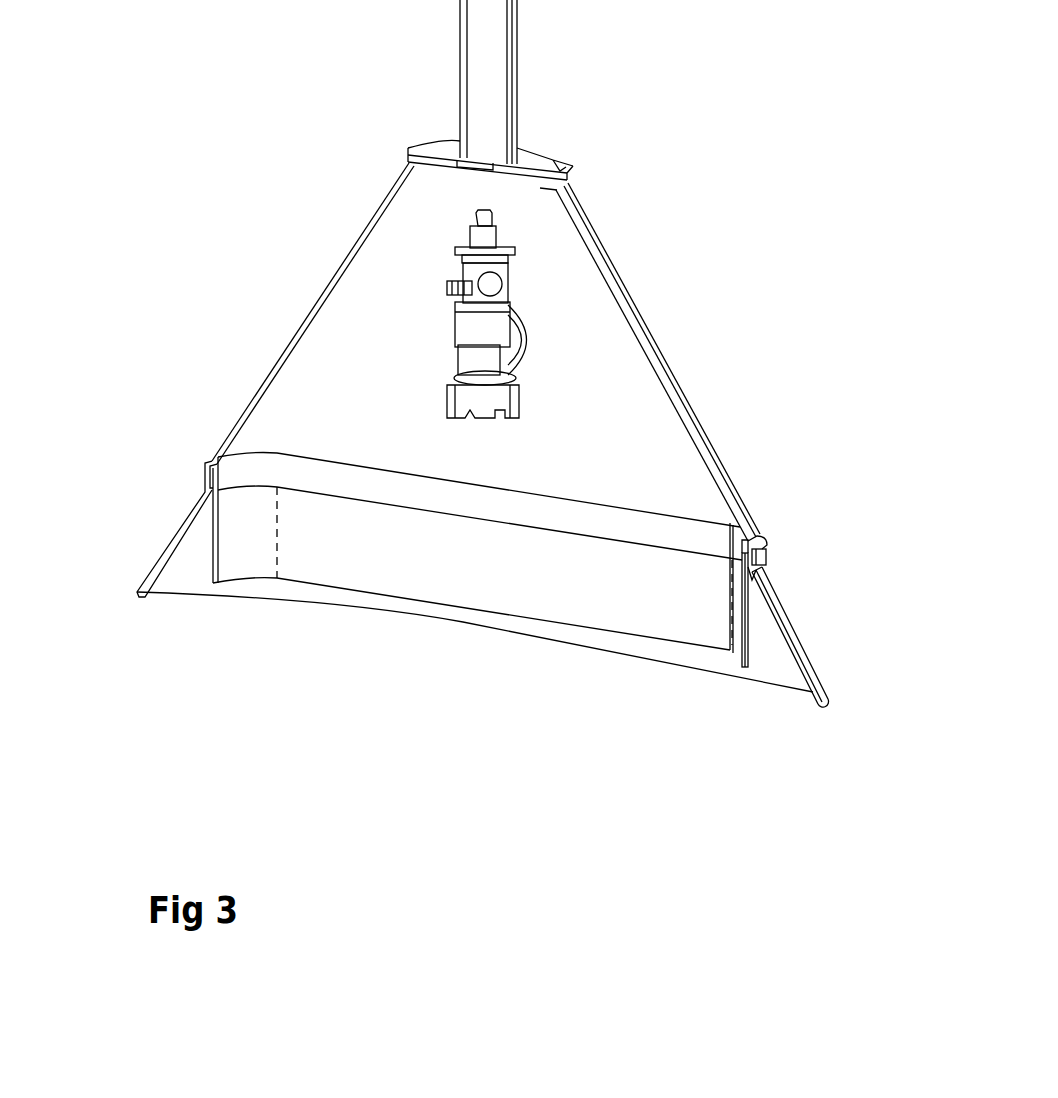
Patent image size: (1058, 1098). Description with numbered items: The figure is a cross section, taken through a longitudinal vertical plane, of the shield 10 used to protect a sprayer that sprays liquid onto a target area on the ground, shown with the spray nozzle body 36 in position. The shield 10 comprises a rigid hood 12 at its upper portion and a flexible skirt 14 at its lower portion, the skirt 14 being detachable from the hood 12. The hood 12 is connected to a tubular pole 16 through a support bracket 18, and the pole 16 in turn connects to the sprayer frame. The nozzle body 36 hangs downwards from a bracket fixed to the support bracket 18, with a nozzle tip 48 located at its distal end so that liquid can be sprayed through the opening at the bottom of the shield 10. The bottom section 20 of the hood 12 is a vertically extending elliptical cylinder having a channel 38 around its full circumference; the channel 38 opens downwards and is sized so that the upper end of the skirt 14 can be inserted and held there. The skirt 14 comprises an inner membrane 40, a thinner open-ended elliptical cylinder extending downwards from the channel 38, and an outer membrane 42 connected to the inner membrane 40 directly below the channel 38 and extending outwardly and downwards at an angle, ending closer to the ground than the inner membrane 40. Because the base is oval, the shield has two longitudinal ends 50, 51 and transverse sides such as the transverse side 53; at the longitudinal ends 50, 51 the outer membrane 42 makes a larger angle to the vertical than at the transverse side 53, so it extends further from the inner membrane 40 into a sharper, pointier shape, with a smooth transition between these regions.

The shield 10 is at (268, 172).
The hood 12 is at (685, 396).
The skirt 14 is at (180, 572).
The tubular pole 16 is at (505, 70).
The support bracket 18 is at (552, 163).
The bottom section 20 is at (768, 535).
The spray nozzle body 36 is at (547, 323).
The channel 38 is at (769, 561).
The inner membrane 40 is at (737, 670).
The outer membrane 42 is at (800, 633).
The nozzle tip 48 is at (455, 390).
The longitudinal end 50 is at (148, 570).
The longitudinal end 51 is at (838, 691).
The transverse side 53 is at (463, 625).